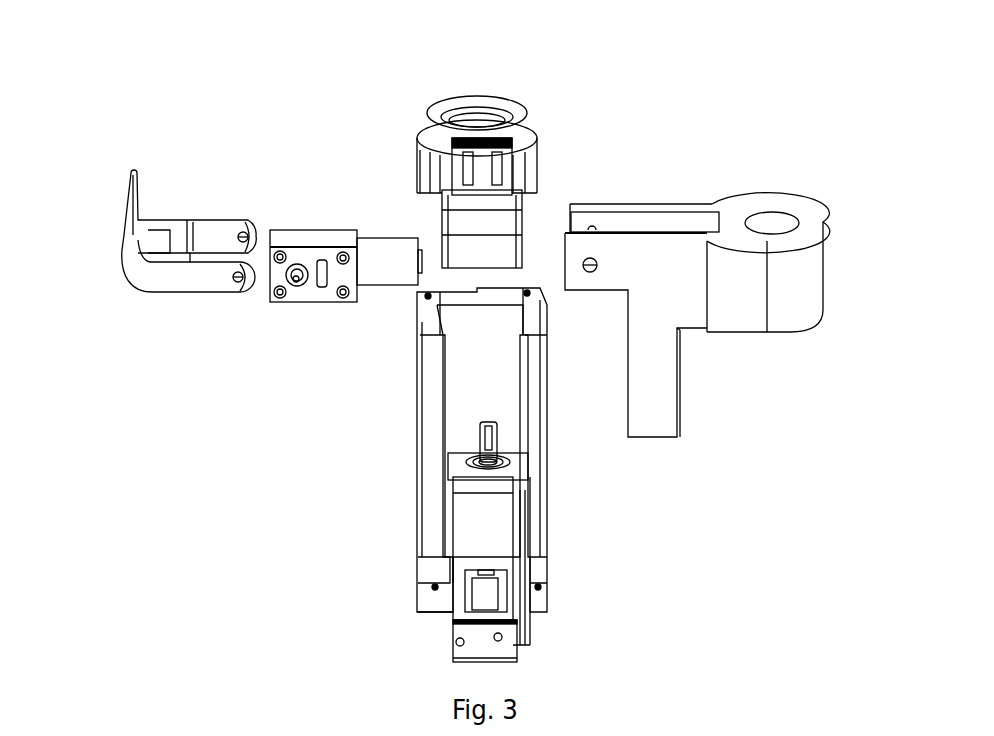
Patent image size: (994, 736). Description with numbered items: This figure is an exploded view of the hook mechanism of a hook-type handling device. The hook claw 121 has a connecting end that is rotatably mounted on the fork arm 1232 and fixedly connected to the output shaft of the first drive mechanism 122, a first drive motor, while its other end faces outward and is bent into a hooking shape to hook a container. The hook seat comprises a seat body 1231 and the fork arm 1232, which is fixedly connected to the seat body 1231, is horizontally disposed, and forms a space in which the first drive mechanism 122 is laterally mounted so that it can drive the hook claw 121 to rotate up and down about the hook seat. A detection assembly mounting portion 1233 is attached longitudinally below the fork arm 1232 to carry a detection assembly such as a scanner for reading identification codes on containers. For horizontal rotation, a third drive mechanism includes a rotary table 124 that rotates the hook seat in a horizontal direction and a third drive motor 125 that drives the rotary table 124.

The hook claw 121 is at (187, 225).
The first drive mechanism 122 is at (333, 235).
The rotary table 124 is at (483, 100).
The third drive motor 125 is at (473, 523).
The seat body 1231 is at (773, 203).
The fork arm 1232 is at (623, 218).
The detection assembly mounting portion 1233 is at (668, 425).